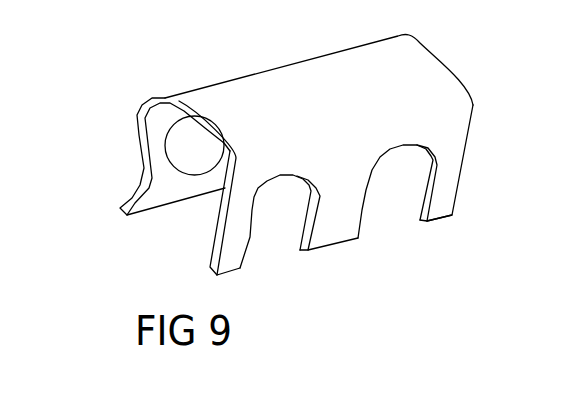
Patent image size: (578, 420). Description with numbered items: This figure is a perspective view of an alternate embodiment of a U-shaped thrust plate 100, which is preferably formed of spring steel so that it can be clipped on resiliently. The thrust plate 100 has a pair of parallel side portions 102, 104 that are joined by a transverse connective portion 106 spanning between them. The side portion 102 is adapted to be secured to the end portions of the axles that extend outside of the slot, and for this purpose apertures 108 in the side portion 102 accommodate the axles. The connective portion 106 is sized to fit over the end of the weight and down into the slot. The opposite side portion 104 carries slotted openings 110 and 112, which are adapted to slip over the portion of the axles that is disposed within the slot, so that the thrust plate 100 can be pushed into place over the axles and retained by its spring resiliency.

The thrust plate 100 is at (312, 149).
The side portion 102 is at (148, 172).
The side portion 104 is at (366, 197).
The connective portion 106 is at (403, 85).
The apertures 108 is at (176, 172).
The slotted opening 110 is at (250, 238).
The slotted opening 112 is at (372, 202).